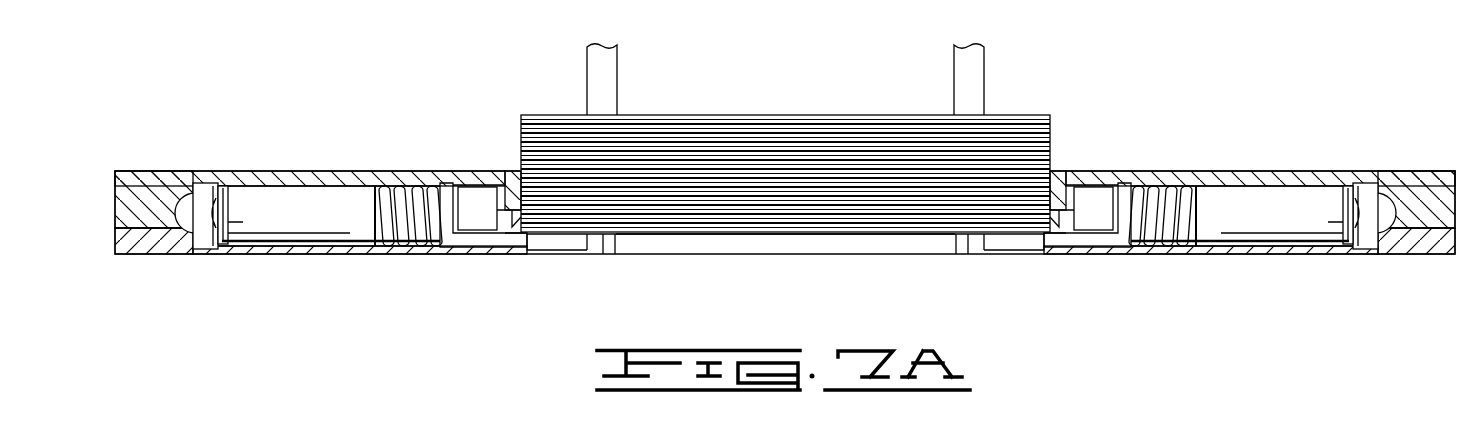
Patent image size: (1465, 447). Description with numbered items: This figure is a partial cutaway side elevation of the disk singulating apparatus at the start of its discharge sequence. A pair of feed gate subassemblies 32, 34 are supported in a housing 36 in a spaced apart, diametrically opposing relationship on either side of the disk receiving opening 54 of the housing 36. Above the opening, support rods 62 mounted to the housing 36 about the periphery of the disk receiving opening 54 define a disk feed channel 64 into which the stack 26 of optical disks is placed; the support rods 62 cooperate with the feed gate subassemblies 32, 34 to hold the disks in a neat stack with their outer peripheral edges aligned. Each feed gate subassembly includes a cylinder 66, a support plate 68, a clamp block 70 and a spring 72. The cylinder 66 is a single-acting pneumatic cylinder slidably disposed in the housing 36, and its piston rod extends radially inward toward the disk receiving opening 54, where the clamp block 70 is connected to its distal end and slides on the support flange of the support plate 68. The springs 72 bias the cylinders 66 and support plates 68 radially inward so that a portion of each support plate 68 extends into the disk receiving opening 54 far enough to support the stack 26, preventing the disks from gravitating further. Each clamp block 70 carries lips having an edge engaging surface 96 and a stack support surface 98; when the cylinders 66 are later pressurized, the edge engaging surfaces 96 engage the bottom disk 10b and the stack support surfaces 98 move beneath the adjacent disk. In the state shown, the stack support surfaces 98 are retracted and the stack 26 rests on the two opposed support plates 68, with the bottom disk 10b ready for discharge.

The housing 36 is at (155, 172).
The feed gate subassembly 32 is at (307, 190).
The feed gate subassembly 34 is at (1271, 193).
The disk feed channel 64 is at (787, 117).
The stack 26 is at (840, 114).
The support rods 62 is at (984, 70).
The disk receiving opening 54 is at (722, 243).
The bottom disk 10b is at (850, 236).
The edge engaging surface 96 is at (530, 232).
The stack support surface 98 is at (515, 227).
The clamp block 70 is at (482, 187).
The support plate 68 is at (450, 242).
The spring 72 is at (395, 228).
The cylinder 66 is at (300, 221).